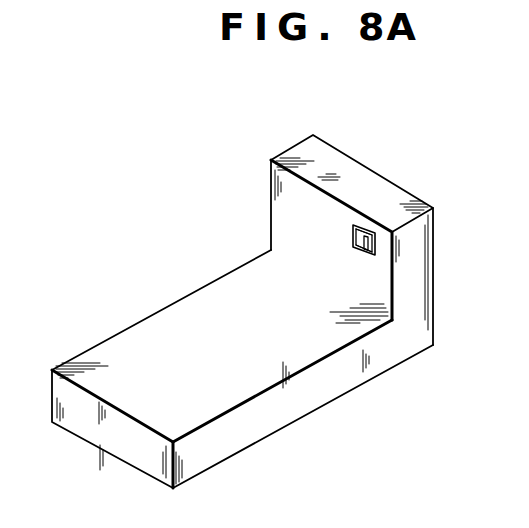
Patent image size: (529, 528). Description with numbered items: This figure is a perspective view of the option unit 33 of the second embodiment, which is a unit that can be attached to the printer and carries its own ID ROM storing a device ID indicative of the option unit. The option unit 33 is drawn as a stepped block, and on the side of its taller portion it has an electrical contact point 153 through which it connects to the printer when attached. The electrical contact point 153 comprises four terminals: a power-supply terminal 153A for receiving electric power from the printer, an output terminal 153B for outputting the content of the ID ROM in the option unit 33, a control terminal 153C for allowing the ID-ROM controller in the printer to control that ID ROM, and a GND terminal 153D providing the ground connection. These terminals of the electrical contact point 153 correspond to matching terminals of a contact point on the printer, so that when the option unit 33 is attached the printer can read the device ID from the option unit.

The option unit 33 is at (378, 188).
The electrical contact point 153 is at (376, 234).
The power-supply terminal 153A is at (374, 249).
The output terminal 153B is at (368, 251).
The control terminal 153C is at (362, 257).
The GND terminal 153D is at (367, 226).